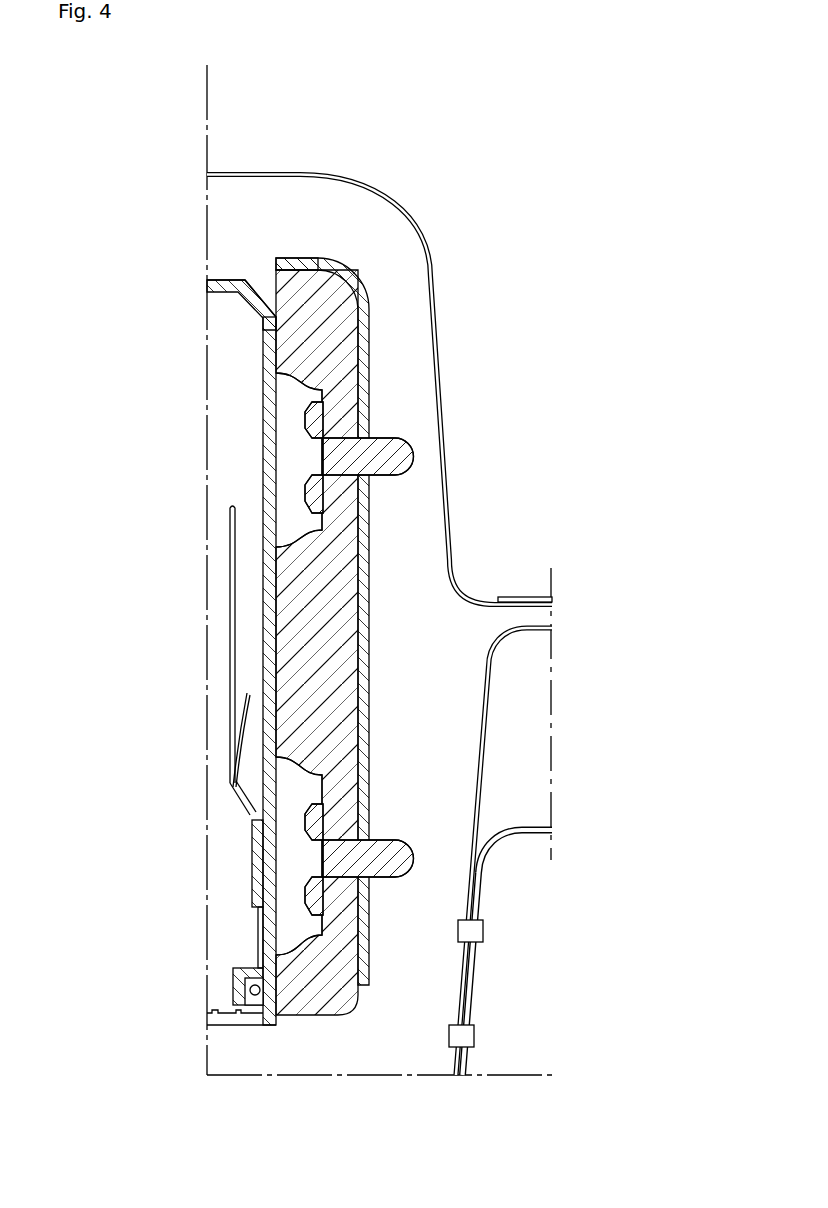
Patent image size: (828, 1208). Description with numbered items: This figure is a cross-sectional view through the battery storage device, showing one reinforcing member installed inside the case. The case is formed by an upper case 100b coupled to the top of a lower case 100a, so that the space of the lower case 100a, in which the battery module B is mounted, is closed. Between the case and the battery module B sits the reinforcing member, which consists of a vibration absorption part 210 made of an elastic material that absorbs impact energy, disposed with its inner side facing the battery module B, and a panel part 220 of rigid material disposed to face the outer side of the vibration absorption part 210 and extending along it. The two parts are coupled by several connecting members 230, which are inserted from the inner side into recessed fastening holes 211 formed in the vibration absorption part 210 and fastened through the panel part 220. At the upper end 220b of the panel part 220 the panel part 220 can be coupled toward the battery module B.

The lower case 100a is at (487, 737).
The upper case 100b is at (445, 407).
The vibration absorption part 210 is at (303, 655).
The fastening holes 211 is at (318, 376).
The panel part 220 is at (369, 522).
The upper end of the panel part 220b is at (318, 260).
The connecting members 230 is at (400, 458).
The battery module B is at (215, 287).